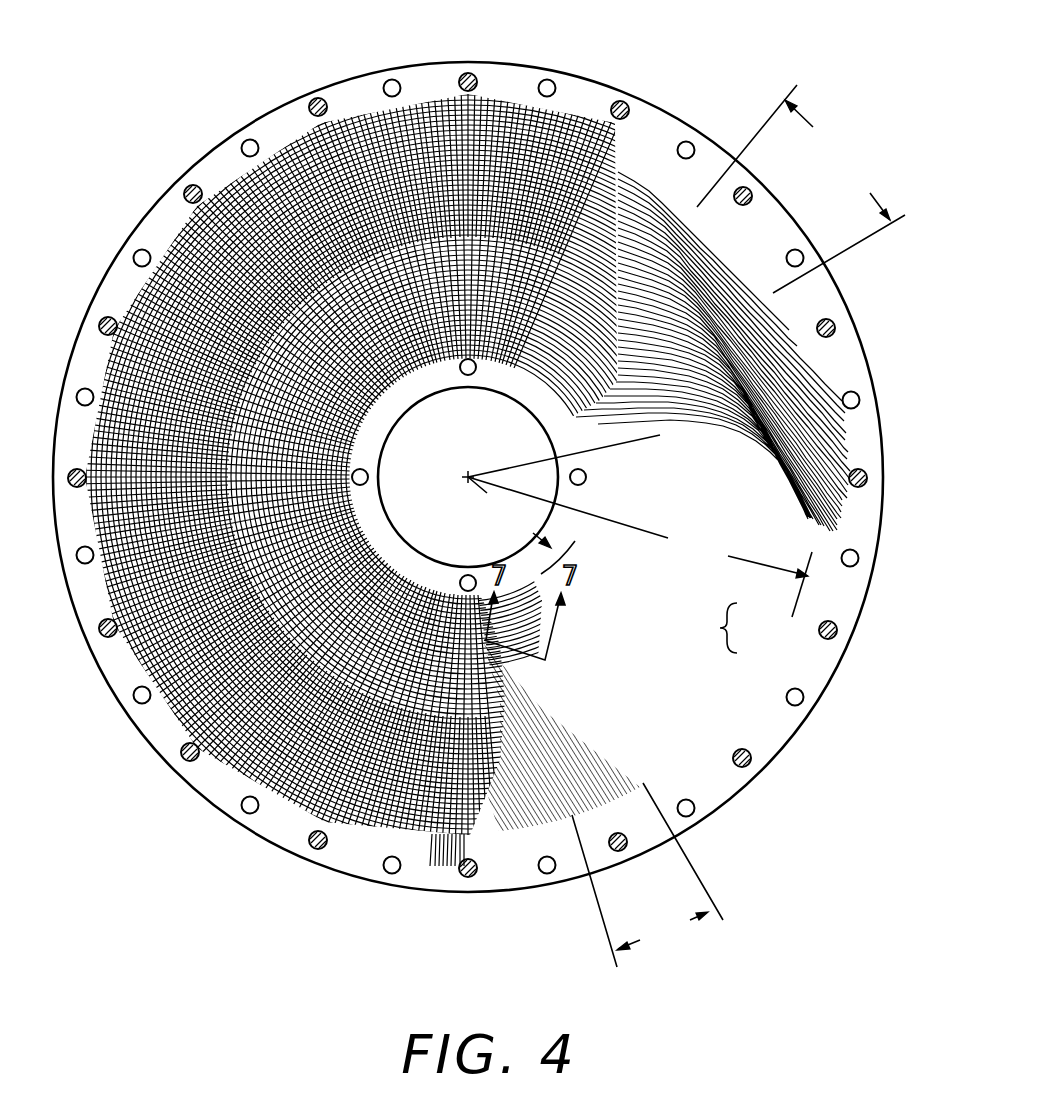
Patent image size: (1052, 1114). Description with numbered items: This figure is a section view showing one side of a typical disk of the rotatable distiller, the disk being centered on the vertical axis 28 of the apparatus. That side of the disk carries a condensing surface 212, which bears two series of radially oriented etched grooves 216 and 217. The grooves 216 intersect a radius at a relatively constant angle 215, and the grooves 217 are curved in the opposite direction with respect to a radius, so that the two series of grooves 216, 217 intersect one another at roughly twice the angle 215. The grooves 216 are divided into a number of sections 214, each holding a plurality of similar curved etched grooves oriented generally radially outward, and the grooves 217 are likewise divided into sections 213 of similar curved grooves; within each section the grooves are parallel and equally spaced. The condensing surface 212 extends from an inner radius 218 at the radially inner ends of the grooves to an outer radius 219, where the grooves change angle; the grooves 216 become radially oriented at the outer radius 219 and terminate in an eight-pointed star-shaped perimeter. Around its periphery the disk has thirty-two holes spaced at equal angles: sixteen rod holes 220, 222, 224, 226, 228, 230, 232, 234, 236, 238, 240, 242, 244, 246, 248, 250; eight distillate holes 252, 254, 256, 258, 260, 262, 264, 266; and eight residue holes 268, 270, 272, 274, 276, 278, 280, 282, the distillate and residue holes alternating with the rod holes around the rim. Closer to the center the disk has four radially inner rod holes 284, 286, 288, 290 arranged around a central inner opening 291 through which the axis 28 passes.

The vertical axis 28 is at (467, 468).
The condensing surface 212 is at (700, 628).
The sections 213 is at (647, 875).
The sections 214 is at (801, 189).
The angle 215 is at (641, 439).
The etched grooves 216 is at (717, 463).
The etched grooves 217 is at (585, 745).
The inner radius 218 is at (521, 525).
The outer radius 219 is at (640, 547).
The rod hole 220 is at (391, 874).
The rod hole 222 is at (245, 814).
The rod hole 224 is at (136, 702).
The rod hole 226 is at (86, 564).
The rod hole 228 is at (88, 388).
The rod hole 230 is at (134, 254).
The rod hole 232 is at (243, 144).
The rod hole 234 is at (392, 79).
The rod hole 236 is at (547, 79).
The rod hole 238 is at (689, 141).
The rod hole 240 is at (802, 251).
The rod hole 242 is at (850, 391).
The rod hole 244 is at (849, 567).
The rod hole 246 is at (788, 704).
The rod hole 248 is at (693, 815).
The rod hole 250 is at (547, 874).
The distillate hole 252 is at (468, 877).
The distillate hole 254 is at (182, 759).
The distillate hole 256 is at (78, 487).
The distillate hole 258 is at (185, 191).
The distillate hole 260 is at (468, 73).
The distillate hole 262 is at (750, 190).
The distillate hole 264 is at (859, 488).
The distillate hole 266 is at (750, 766).
The residue hole 268 is at (312, 849).
The residue hole 270 is at (110, 637).
The residue hole 272 is at (110, 317).
The residue hole 274 is at (311, 99).
The residue hole 276 is at (624, 101).
The residue hole 278 is at (818, 324).
The residue hole 280 is at (821, 639).
The residue hole 282 is at (620, 852).
The radially inner rod hole 284 is at (468, 575).
The radially inner rod hole 286 is at (369, 477).
The radially inner rod hole 288 is at (468, 375).
The radially inner rod hole 290 is at (587, 477).
The inner opening 291 is at (428, 398).